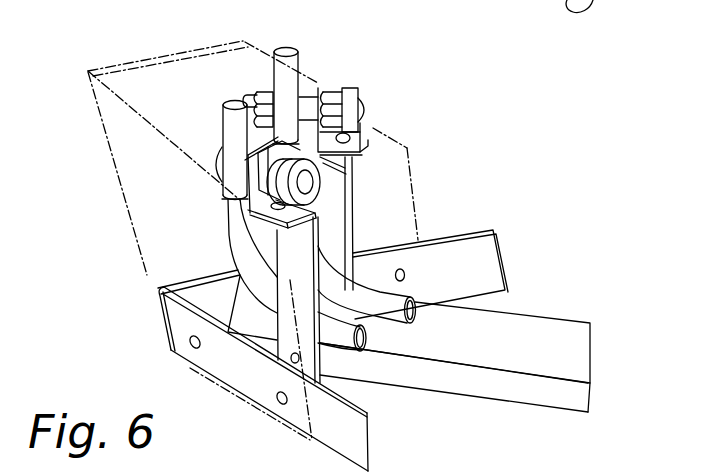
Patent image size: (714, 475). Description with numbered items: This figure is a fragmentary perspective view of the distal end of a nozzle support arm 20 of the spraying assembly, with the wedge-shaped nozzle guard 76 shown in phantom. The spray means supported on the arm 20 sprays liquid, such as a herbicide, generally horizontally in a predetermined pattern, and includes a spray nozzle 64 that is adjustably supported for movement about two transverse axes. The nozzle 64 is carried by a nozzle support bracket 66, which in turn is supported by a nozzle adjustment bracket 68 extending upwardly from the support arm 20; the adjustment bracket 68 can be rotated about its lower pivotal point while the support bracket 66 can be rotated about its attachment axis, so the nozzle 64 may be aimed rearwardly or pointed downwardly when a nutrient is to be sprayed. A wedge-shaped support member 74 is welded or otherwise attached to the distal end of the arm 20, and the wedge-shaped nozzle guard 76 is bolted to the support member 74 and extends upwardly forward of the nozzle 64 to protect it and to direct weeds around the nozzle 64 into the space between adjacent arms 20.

The support arm 20 is at (557, 333).
The spray nozzle 64 is at (347, 97).
The nozzle support bracket 66 is at (318, 88).
The nozzle adjustment bracket 68 is at (337, 210).
The wedge-shaped support member 74 is at (487, 255).
The wedge-shaped nozzle guard 76 is at (140, 60).